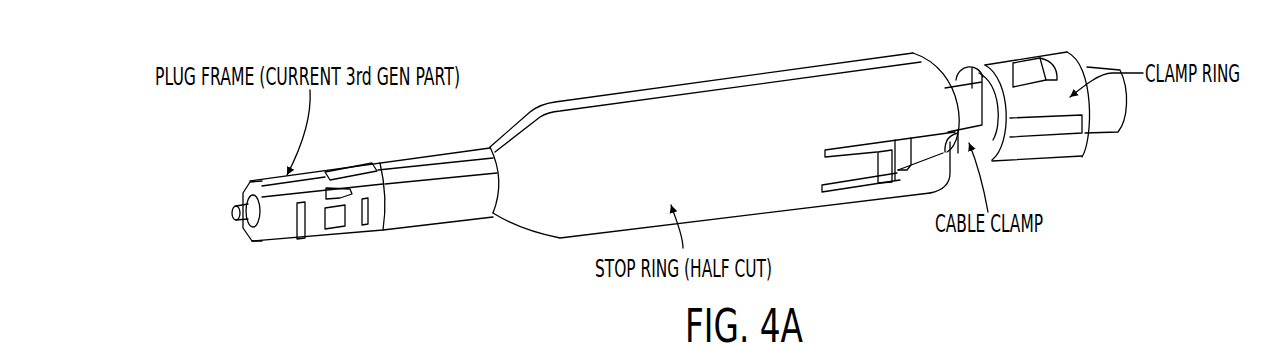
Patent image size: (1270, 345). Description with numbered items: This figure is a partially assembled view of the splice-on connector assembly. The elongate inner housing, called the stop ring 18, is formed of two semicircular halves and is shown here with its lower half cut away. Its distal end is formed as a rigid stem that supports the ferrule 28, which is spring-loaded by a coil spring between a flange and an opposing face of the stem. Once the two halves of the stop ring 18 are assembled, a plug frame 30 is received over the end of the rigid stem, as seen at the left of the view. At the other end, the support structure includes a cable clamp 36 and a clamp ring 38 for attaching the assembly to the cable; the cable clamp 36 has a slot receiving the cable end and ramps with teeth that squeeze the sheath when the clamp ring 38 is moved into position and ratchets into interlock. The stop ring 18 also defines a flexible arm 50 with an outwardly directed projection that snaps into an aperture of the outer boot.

The stop ring 18 is at (925, 77).
The ferrule 28 is at (243, 221).
The plug frame 30 is at (263, 183).
The cable clamp 36 is at (969, 79).
The clamp ring 38 is at (1062, 70).
The arm 50 is at (844, 164).